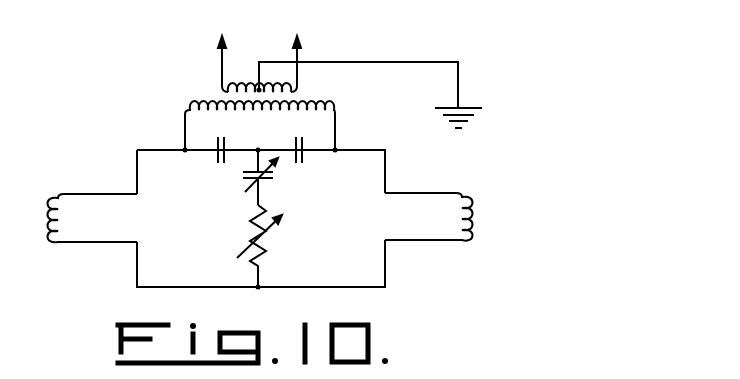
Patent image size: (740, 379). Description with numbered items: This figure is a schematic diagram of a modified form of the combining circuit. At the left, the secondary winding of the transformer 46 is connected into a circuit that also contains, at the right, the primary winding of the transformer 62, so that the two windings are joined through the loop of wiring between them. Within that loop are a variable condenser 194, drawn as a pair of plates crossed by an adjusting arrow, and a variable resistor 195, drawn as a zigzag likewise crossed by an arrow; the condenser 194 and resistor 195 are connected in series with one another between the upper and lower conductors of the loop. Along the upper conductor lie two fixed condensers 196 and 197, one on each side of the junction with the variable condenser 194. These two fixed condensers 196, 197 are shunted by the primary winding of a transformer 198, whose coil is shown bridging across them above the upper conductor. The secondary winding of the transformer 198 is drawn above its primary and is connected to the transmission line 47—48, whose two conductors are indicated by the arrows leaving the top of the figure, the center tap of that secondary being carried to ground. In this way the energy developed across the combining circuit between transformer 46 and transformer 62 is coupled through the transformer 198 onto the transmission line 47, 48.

The transformer 46 is at (58, 243).
The transformer 62 is at (464, 241).
The transmission line 47 is at (222, 58).
The transmission line 48 is at (298, 58).
The variable condenser 194 is at (248, 173).
The variable resistor 195 is at (264, 246).
The fixed condenser 196 is at (217, 167).
The fixed condenser 197 is at (300, 165).
The transformer 198 is at (225, 102).